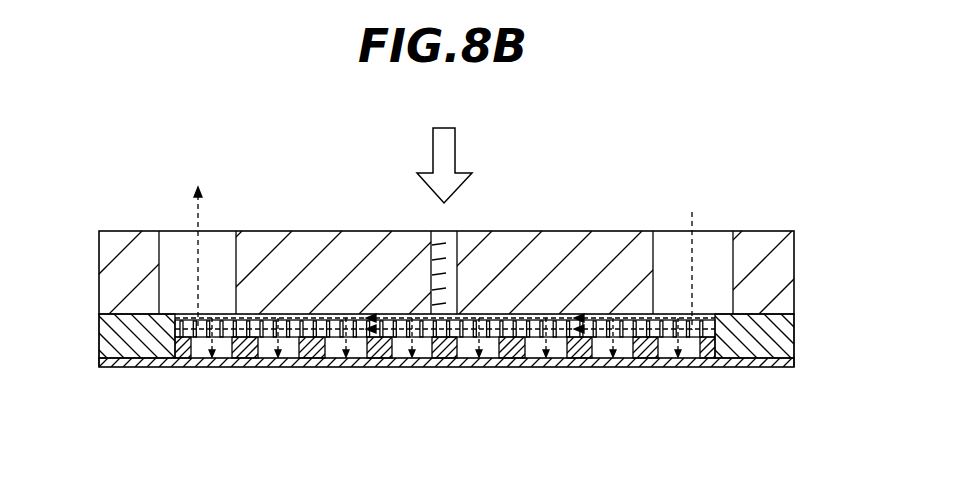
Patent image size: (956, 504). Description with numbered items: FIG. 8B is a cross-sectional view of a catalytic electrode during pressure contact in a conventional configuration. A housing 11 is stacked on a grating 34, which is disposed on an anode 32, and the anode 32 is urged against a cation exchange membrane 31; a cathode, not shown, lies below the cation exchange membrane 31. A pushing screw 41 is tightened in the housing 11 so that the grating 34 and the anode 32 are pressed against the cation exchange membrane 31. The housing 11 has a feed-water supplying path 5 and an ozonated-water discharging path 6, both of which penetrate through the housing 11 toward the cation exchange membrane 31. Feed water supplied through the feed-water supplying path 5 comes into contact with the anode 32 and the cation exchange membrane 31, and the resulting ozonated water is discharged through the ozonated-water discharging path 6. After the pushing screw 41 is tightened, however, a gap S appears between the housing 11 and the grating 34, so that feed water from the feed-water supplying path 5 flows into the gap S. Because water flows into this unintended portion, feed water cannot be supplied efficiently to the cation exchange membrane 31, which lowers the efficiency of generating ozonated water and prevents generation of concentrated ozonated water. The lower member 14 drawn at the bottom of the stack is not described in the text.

The feed-water supplying path 5 is at (710, 248).
The ozonated-water discharging path 6 is at (215, 248).
The pushing screw 41 is at (452, 232).
The housing 11 is at (795, 277).
The grating 34 is at (175, 325).
The lower member 14 is at (92, 357).
The anode 32 is at (173, 339).
The cation exchange membrane 31 is at (795, 366).
The gap S is at (707, 318).